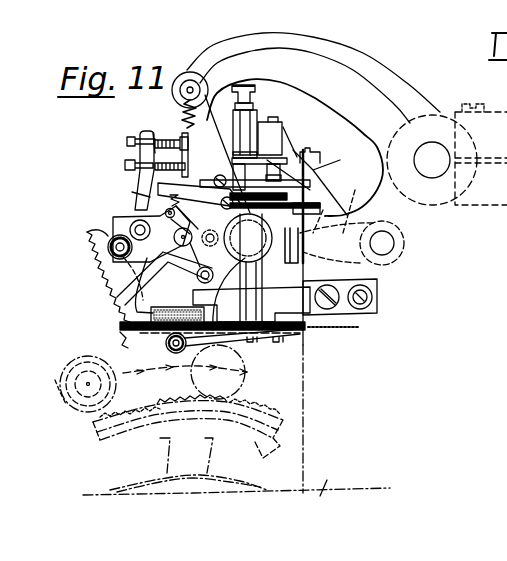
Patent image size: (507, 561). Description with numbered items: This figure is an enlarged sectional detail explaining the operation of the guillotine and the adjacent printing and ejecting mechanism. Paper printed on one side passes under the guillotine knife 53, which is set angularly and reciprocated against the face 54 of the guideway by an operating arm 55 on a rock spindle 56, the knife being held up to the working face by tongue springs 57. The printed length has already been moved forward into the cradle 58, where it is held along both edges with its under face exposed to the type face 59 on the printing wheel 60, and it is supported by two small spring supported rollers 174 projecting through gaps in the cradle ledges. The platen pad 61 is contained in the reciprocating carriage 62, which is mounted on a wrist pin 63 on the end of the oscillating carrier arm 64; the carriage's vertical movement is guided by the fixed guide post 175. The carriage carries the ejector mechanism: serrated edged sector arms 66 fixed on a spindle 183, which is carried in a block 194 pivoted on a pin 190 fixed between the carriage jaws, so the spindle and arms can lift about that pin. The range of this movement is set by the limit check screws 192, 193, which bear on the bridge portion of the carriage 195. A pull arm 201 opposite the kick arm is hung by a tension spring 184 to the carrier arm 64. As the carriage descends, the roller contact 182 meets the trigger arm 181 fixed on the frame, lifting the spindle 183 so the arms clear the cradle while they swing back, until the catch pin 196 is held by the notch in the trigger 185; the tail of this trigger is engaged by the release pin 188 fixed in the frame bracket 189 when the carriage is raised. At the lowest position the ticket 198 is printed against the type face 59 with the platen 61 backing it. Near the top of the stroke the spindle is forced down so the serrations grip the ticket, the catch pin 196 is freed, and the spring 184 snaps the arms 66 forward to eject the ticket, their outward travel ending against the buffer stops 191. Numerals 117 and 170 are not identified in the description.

The oscillating carrier arm 64 is at (427, 76).
The wrist pin 63 is at (432, 178).
The operating arm 55 is at (335, 188).
The tension spring 184 is at (178, 112).
The limit check screw 192 is at (127, 140).
The limit check screw 193 is at (125, 163).
The reciprocating carriage 62 is at (125, 178).
The block 194 is at (124, 194).
The pull arm 201 is at (164, 212).
The serrated edged sector arms 66 is at (108, 303).
The pin 190 is at (118, 236).
The buffer stops 191 is at (116, 249).
The spindle 183 is at (183, 237).
The catch pin 196 is at (190, 258).
The roller contact 182 is at (200, 282).
The trigger arm 181 is at (227, 298).
The cradle 58 is at (127, 327).
The ticket 198 is at (125, 343).
The type face 59 is at (292, 345).
The face of the guideway 54 is at (288, 340).
The platen pad 61 is at (185, 362).
The cam wheel 117 is at (117, 390).
The spring supported rollers 174 is at (193, 366).
The printing wheel 60 is at (236, 445).
The guillotine knife 53 is at (297, 322).
The fixed guide post 175 is at (280, 300).
The tongue springs 57 is at (303, 267).
The rock spindle 56 is at (395, 255).
The column bearing 170 is at (248, 268).
The bridge portion of the carriage 195 is at (188, 158).
The trigger 185 is at (245, 168).
The frame bracket 189 is at (285, 170).
The release pin 188 is at (317, 173).